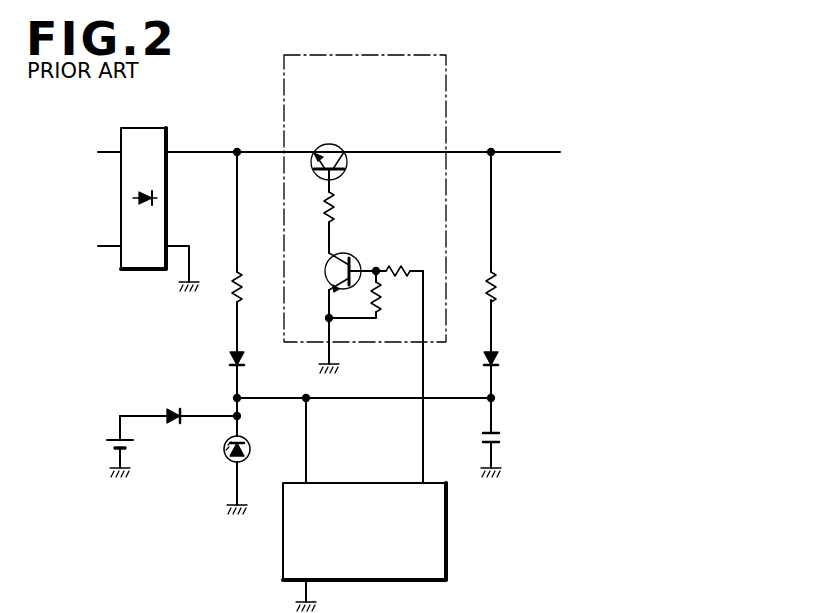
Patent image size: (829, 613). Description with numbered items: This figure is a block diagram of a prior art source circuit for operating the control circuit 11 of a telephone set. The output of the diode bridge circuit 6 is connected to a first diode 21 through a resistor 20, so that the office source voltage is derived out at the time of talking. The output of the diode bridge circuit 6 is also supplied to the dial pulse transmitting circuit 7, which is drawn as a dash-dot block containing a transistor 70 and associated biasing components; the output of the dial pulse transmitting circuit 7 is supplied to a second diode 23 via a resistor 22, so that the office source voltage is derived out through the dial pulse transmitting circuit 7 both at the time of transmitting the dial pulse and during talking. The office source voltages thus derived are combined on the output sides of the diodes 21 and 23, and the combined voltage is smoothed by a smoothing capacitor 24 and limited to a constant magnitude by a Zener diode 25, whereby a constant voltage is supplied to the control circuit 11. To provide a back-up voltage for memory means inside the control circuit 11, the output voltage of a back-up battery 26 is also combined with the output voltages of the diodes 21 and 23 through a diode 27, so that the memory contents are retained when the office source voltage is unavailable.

The diode bridge circuit 6 is at (155, 128).
The dial pulse transmitting circuit 7 is at (446, 103).
The transistor 70 is at (338, 174).
The resistor 20 is at (229, 282).
The first diode 21 is at (229, 357).
The resistor 22 is at (499, 289).
The second diode 23 is at (500, 358).
The smoothing capacitor 24 is at (503, 437).
The Zener diode 25 is at (227, 461).
The back-up battery 26 is at (105, 447).
The diode 27 is at (177, 411).
The control circuit 11 is at (447, 552).